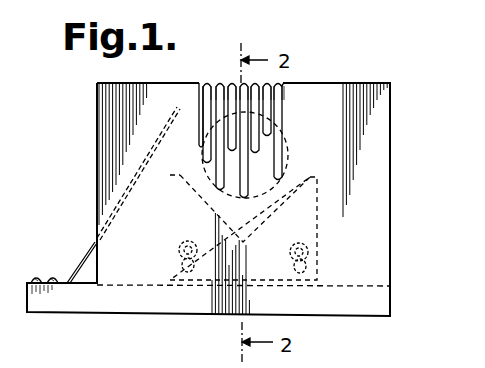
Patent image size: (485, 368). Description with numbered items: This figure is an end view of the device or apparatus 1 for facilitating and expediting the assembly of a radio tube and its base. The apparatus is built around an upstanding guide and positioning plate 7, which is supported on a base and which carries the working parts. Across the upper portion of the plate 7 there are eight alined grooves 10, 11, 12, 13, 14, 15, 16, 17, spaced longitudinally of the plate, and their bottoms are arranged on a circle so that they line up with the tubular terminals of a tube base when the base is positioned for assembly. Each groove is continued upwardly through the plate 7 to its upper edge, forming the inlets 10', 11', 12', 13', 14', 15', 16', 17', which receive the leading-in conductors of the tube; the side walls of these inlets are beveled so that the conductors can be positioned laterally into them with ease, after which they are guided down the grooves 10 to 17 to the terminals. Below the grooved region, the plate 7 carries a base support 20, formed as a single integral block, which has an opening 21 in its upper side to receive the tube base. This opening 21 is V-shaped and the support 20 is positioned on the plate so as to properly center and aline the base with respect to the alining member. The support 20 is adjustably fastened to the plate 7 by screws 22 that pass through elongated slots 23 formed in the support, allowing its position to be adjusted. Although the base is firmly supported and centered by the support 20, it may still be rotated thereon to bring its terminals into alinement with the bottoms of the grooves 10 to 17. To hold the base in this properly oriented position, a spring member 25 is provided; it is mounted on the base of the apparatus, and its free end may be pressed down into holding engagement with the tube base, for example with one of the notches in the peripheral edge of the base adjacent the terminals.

The device or apparatus 1 is at (392, 183).
The guide and positioning plate 7 is at (372, 252).
The groove 10 is at (191, 164).
The groove 11 is at (191, 122).
The groove 12 is at (202, 152).
The groove 13 is at (237, 128).
The groove 14 is at (242, 154).
The groove 15 is at (263, 127).
The groove 16 is at (287, 133).
The groove 17 is at (295, 131).
The inlet 10' is at (180, 105).
The inlet 11' is at (201, 74).
The inlet 12' is at (223, 74).
The inlet 13' is at (252, 63).
The inlet 14' is at (272, 63).
The inlet 15' is at (294, 73).
The inlet 16' is at (313, 76).
The inlet 17' is at (323, 82).
The base support 20 is at (318, 228).
The opening 21 is at (245, 215).
The screws 22 is at (318, 245).
The elongated slots 23 is at (318, 265).
The spring member 25 is at (92, 245).